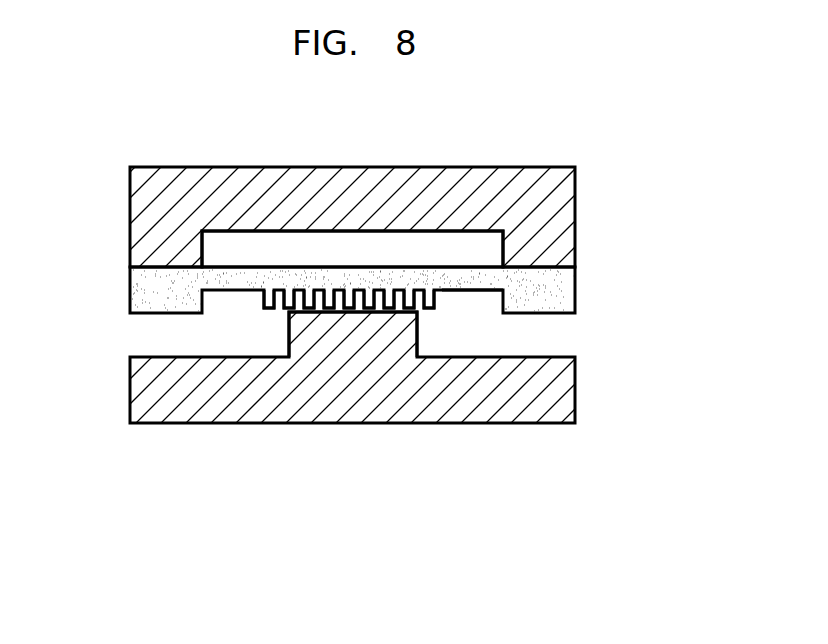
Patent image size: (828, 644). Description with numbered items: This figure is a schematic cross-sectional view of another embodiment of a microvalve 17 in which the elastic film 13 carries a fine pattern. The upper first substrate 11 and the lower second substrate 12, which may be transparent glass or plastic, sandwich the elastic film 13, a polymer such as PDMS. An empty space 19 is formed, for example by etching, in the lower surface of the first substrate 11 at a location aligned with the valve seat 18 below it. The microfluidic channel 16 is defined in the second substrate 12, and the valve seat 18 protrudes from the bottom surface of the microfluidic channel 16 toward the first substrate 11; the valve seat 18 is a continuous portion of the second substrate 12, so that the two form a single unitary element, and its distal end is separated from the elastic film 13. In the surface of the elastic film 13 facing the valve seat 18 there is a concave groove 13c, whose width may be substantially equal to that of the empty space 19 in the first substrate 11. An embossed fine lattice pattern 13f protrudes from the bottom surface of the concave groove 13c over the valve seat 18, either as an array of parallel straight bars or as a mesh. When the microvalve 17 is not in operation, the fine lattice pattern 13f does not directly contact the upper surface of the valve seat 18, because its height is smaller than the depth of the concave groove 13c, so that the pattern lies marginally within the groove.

The first substrate 11 is at (575, 218).
The second substrate 12 is at (575, 390).
The elastic film 13 is at (575, 290).
The fine lattice pattern 13f is at (437, 308).
The concave groove 13c is at (472, 290).
The microfluidic channel 16 is at (168, 335).
The microvalve 17 is at (596, 168).
The valve seat 18 is at (288, 338).
The empty space 19 is at (427, 252).